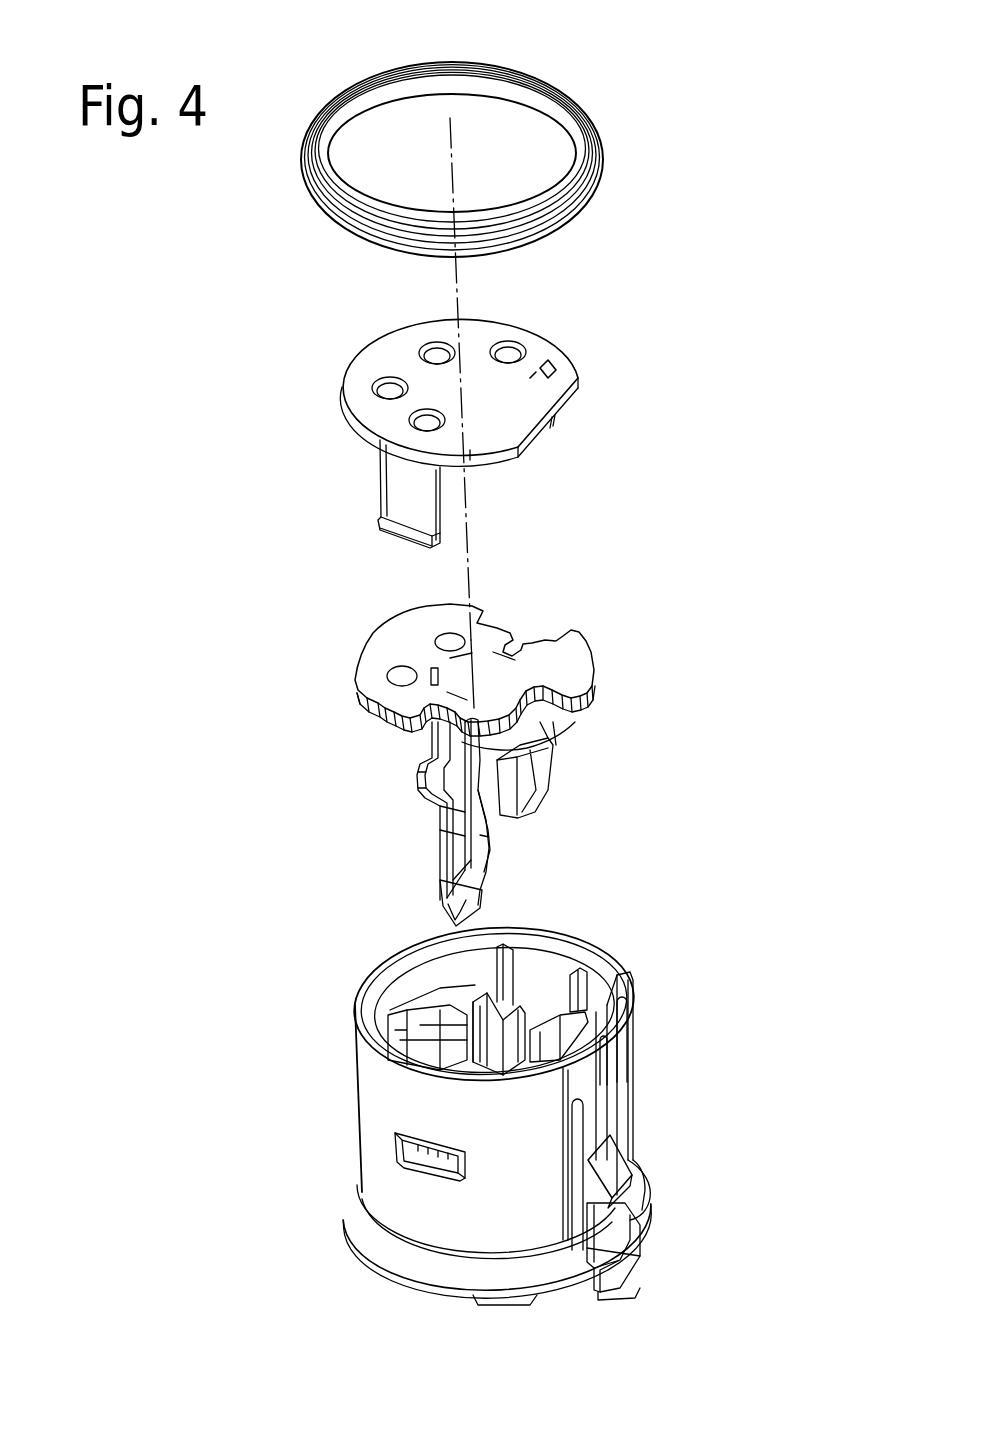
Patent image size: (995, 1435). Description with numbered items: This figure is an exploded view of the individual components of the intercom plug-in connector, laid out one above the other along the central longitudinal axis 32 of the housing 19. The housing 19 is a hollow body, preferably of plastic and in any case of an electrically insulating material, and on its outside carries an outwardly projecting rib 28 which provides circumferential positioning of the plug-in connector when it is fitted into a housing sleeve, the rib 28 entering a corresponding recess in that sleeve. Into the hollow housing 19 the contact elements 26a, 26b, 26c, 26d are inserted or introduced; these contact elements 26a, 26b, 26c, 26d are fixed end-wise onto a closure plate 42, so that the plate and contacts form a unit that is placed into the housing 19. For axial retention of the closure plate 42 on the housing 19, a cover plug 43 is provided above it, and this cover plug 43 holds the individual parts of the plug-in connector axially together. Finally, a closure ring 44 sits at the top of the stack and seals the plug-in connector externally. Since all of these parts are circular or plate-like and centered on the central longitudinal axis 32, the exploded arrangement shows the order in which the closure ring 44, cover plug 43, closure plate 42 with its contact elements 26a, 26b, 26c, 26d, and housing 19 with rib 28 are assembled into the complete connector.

The housing 19 is at (508, 1188).
The contact element 26a is at (465, 817).
The contact element 26b is at (543, 762).
The contact element 26c is at (483, 842).
The contact element 26d is at (422, 773).
The outwardly projecting rib 28 is at (623, 973).
The central longitudinal axis 32 is at (455, 572).
The closure plate 42 is at (565, 660).
The cover plug 43 is at (540, 347).
The closure ring 44 is at (563, 114).